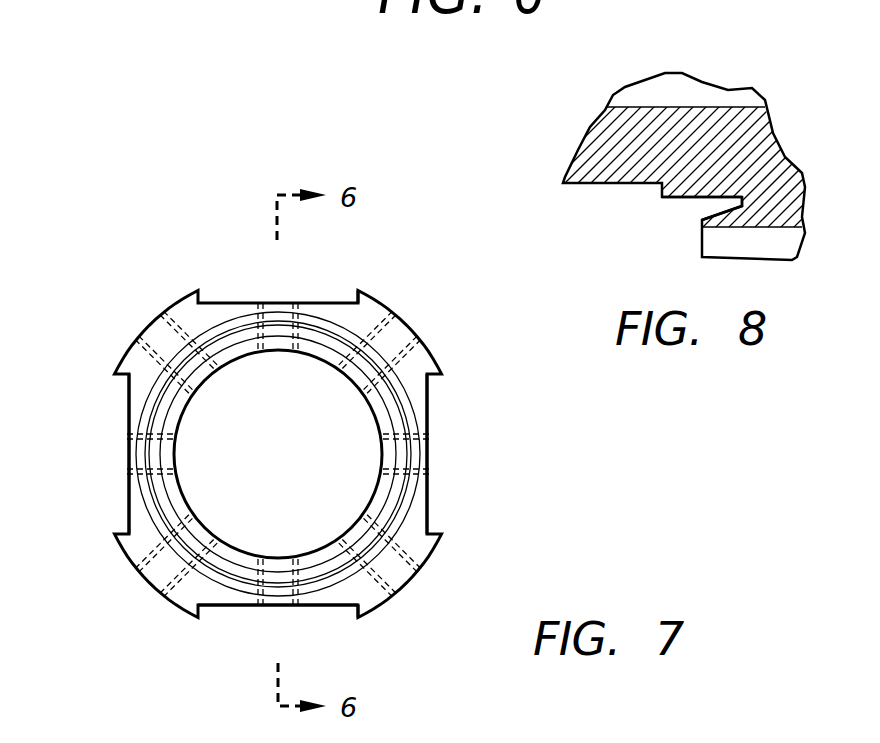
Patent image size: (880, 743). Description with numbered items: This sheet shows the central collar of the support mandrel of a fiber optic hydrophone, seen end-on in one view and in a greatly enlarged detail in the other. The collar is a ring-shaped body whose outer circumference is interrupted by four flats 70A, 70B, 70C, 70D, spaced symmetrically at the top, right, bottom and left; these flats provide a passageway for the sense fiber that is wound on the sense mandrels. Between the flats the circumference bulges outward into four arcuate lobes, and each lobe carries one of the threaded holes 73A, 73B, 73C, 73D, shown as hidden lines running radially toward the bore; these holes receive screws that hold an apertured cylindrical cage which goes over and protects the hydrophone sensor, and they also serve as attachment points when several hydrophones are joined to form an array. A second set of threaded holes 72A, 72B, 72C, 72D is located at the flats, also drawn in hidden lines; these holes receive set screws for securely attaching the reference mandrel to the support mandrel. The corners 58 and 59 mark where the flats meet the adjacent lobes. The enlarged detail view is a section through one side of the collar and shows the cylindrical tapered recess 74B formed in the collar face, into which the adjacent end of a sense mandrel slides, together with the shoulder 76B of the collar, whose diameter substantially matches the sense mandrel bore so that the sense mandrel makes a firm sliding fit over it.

In FIG. 7, the corner of flat 58 is at (358, 620).
In FIG. 7, the corner of flat 59 is at (357, 292).
In FIG. 7, the flat 70A is at (313, 303).
In FIG. 7, the flat 70B is at (430, 396).
In FIG. 7, the flat 70C is at (238, 608).
In FIG. 7, the flat 70D is at (128, 392).
In FIG. 7, the threaded hole 72A is at (284, 303).
In FIG. 7, the threaded hole 72B is at (413, 463).
In FIG. 7, the threaded hole 72C is at (288, 606).
In FIG. 7, the threaded hole 72D is at (144, 457).
In FIG. 7, the threaded hole 73A is at (408, 335).
In FIG. 7, the threaded hole 73B is at (415, 590).
In FIG. 7, the threaded hole 73C is at (150, 585).
In FIG. 7, the threaded hole 73D is at (165, 330).
In FIG. 8, the cylindrical tapered recess 74B is at (680, 217).
In FIG. 8, the shoulder 76B is at (673, 200).